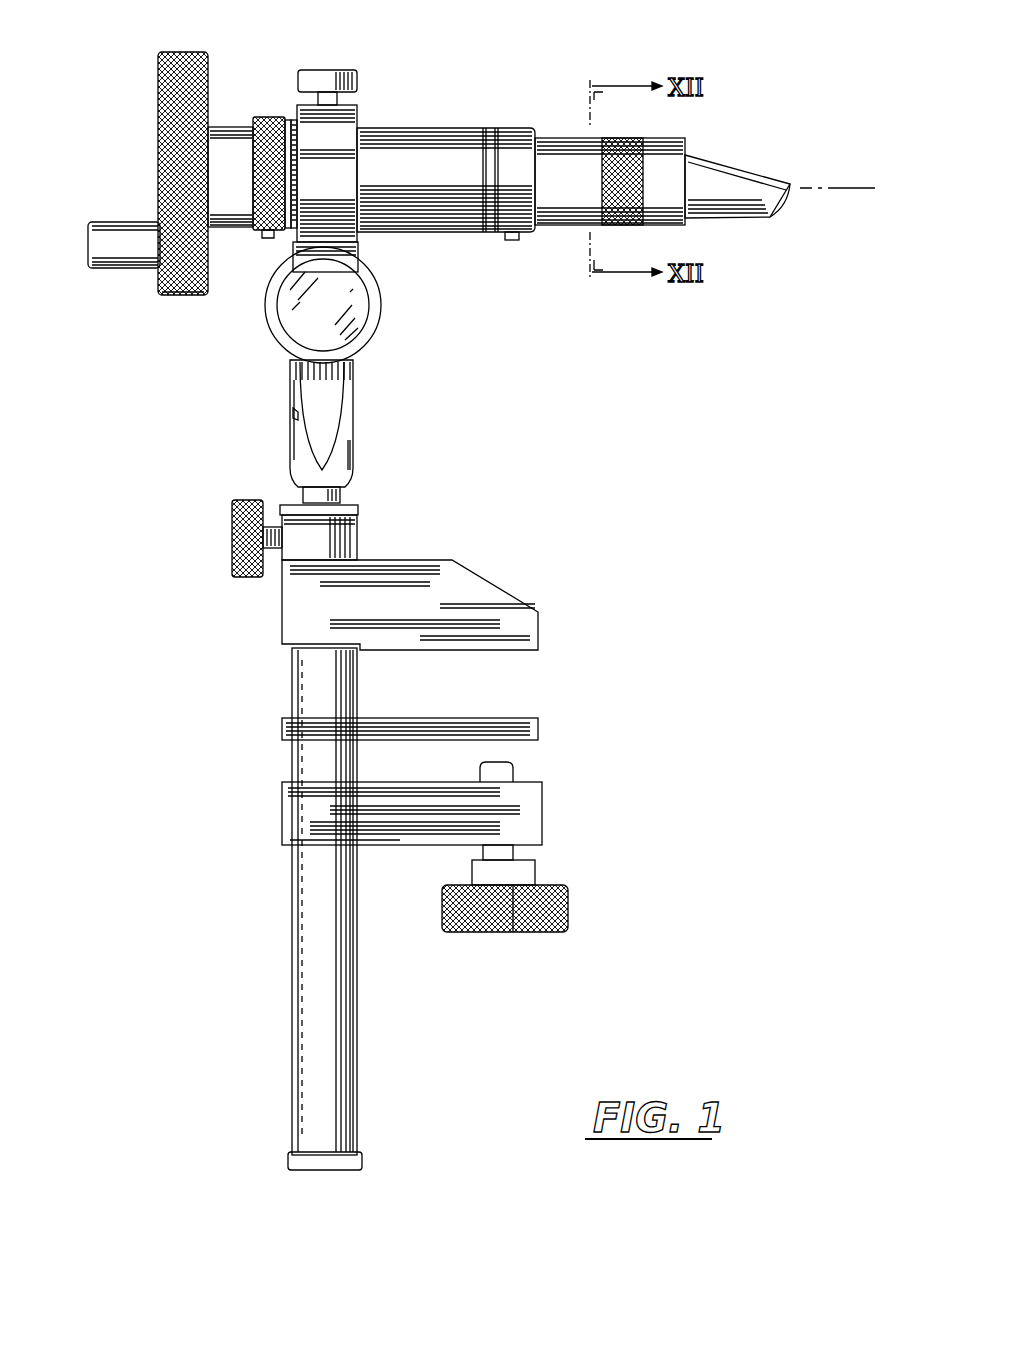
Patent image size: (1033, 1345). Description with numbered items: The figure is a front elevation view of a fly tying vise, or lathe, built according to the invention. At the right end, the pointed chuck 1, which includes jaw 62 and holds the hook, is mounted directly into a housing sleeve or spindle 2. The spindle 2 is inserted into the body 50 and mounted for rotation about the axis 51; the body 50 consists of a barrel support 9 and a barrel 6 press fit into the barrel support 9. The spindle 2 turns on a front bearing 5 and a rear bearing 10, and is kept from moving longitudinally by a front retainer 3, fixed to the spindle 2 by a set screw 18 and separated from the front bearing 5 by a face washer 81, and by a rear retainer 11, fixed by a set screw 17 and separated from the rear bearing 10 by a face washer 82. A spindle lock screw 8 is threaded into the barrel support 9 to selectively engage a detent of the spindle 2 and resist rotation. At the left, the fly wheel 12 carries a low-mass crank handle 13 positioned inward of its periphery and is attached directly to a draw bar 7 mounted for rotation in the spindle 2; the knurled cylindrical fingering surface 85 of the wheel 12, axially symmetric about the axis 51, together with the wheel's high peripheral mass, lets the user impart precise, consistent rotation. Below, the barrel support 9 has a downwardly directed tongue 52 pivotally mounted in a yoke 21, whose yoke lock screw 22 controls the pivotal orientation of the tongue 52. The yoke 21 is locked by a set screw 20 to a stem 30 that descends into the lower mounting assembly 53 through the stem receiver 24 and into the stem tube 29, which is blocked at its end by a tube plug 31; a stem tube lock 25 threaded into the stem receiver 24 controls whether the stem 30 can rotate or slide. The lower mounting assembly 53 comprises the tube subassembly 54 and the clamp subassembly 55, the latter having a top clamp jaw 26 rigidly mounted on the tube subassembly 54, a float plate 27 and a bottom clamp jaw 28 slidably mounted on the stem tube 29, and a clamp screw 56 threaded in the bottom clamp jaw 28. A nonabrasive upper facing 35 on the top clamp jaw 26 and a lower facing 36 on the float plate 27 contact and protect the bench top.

The chuck 1 is at (728, 180).
The spindle 2 is at (556, 140).
The front retainer 3 is at (490, 130).
The front bearing 5 is at (486, 232).
The barrel 6 is at (440, 150).
The draw bar 7 is at (258, 122).
The spindle lock screw 8 is at (332, 68).
The barrel support 9 is at (356, 108).
The rear bearing 10 is at (293, 118).
The rear retainer 11 is at (287, 120).
The fly wheel 12 is at (160, 55).
The crank handle 13 is at (100, 262).
The set screw 17 is at (268, 240).
The set screw 18 is at (513, 240).
The set screw 20 is at (290, 415).
The yoke 21 is at (357, 382).
The yoke lock screw 22 is at (360, 320).
The stem receiver 24 is at (352, 545).
The stem tube lock 25 is at (233, 553).
The top clamp jaw 26 is at (522, 627).
The float plate 27 is at (540, 730).
The bottom clamp jaw 28 is at (528, 830).
The stem tube 29 is at (300, 686).
The stem 30 is at (343, 499).
The tube plug 31 is at (360, 1162).
The upper facing 35 is at (530, 656).
The lower facing 36 is at (530, 717).
The body 50 is at (400, 137).
The axis 51 is at (850, 188).
The tongue 52 is at (362, 250).
The lower mounting assembly 53 is at (305, 922).
The tube subassembly 54 is at (300, 758).
The clamp subassembly 55 is at (478, 580).
The clamp screw 56 is at (568, 900).
The jaw 62 is at (735, 216).
The face washer 81 is at (494, 232).
The face washer 82 is at (283, 242).
The fingering surface 85 is at (183, 294).